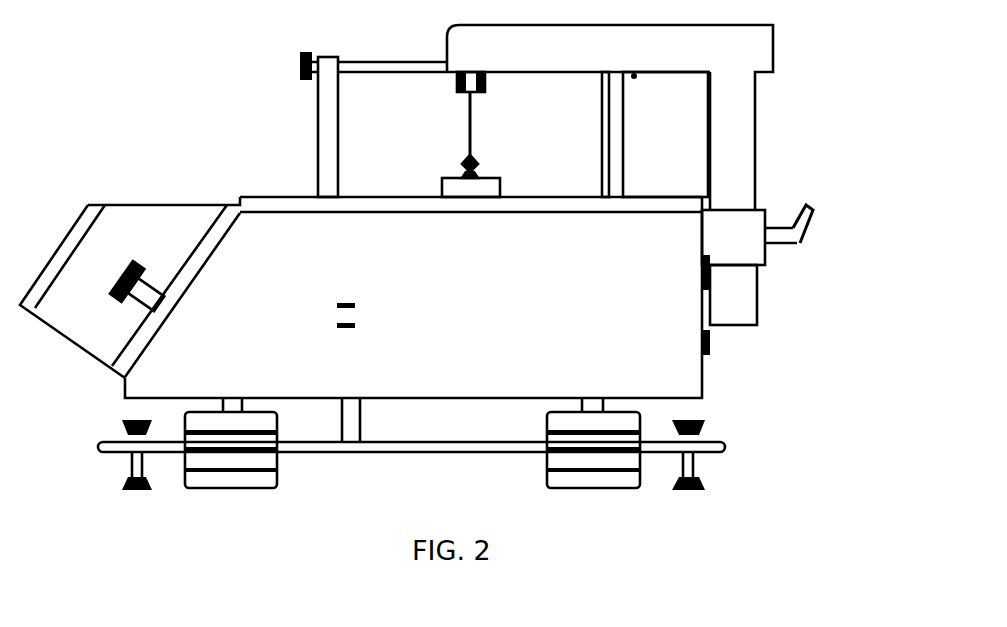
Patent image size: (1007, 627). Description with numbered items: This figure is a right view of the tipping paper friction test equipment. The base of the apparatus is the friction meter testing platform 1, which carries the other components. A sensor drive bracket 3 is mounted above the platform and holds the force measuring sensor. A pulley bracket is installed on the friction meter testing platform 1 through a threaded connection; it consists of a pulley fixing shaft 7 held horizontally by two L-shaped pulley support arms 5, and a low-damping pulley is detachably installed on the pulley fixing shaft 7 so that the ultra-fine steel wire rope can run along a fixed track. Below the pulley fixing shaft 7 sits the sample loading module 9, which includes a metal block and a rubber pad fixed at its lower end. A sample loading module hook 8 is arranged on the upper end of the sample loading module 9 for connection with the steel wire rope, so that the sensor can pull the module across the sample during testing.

The friction meter testing platform 1 is at (650, 320).
The sensor drive bracket 3 is at (738, 53).
The L-shaped pulley support arm 5 is at (320, 97).
The pulley fixing shaft 7 is at (393, 62).
The sample loading module hook 8 is at (463, 170).
The sample loading module 9 is at (452, 188).